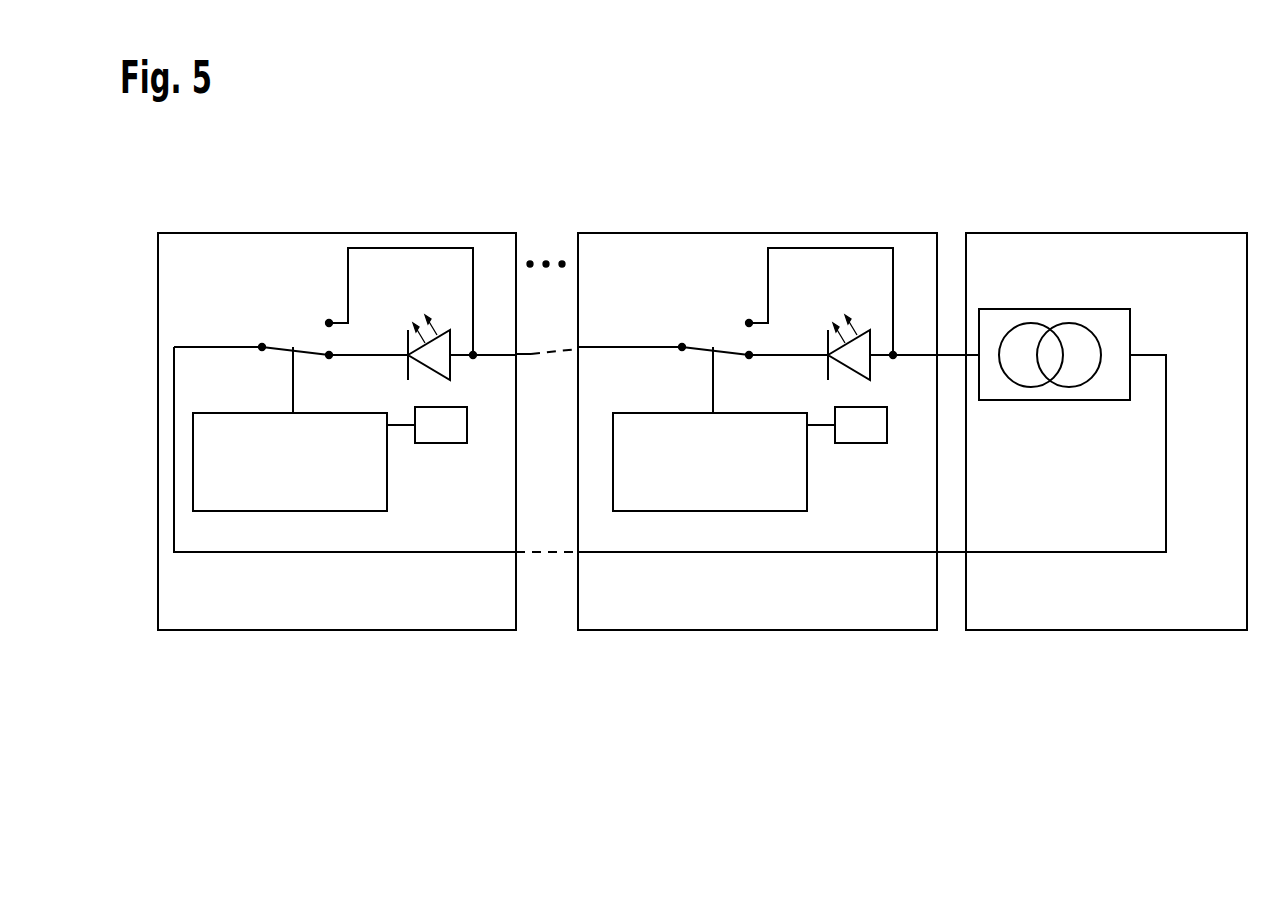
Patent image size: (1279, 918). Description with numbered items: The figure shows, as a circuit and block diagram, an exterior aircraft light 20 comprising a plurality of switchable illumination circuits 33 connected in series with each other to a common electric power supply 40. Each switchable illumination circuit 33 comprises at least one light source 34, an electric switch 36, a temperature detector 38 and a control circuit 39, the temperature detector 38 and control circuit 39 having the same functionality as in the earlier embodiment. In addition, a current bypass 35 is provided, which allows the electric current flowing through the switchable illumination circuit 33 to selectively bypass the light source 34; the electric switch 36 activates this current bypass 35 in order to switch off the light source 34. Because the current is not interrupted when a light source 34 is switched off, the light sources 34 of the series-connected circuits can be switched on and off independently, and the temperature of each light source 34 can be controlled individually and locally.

The exterior aircraft light 20 is at (702, 466).
The switchable illumination circuit 33 is at (505, 208).
The light source 34 is at (441, 300).
The current bypass 35 is at (384, 226).
The electric switch 36 is at (306, 313).
The temperature detector 38 is at (467, 425).
The control circuit 39 is at (387, 493).
The electric power supply 40 is at (1117, 285).